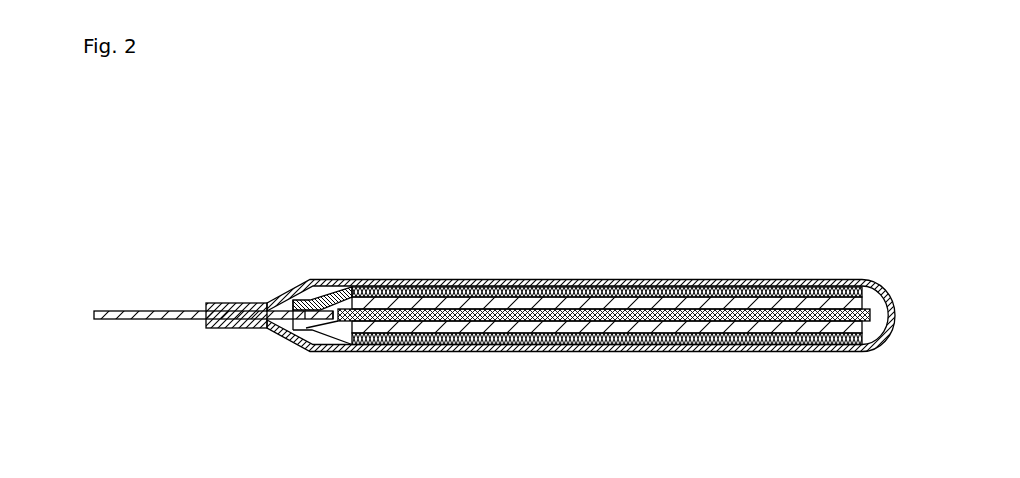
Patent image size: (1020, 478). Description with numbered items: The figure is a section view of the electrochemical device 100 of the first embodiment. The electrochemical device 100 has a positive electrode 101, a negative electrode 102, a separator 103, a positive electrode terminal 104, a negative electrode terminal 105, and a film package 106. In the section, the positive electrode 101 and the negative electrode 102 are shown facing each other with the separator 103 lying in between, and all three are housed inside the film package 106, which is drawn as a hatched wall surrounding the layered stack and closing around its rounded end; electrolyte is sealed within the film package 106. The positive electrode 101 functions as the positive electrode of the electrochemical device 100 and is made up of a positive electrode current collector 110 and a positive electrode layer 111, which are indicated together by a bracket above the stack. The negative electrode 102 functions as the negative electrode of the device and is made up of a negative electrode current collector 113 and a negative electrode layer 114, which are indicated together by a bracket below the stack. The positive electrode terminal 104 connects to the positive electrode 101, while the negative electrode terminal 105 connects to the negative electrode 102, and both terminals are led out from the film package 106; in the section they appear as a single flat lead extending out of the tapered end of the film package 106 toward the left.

The electrochemical device 100 is at (723, 154).
The positive electrode 101 is at (607, 243).
The negative electrode 102 is at (607, 391).
The separator 103 is at (645, 314).
The positive electrode terminal 104 is at (213, 280).
The negative electrode terminal 105 is at (158, 313).
The film package 106 is at (577, 352).
The positive electrode current collector 110 is at (788, 288).
The positive electrode layer 111 is at (833, 297).
The negative electrode current collector 113 is at (783, 352).
The negative electrode layer 114 is at (828, 352).